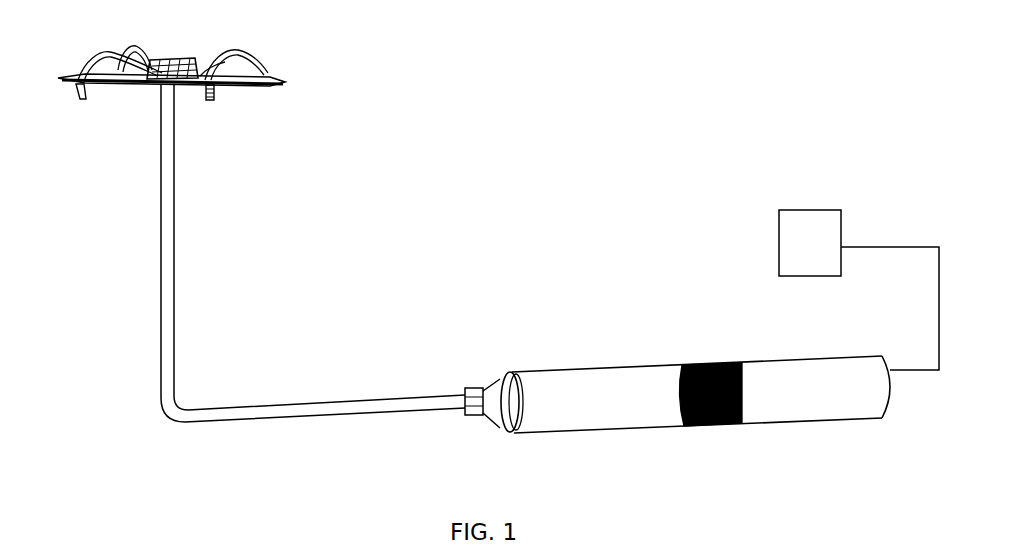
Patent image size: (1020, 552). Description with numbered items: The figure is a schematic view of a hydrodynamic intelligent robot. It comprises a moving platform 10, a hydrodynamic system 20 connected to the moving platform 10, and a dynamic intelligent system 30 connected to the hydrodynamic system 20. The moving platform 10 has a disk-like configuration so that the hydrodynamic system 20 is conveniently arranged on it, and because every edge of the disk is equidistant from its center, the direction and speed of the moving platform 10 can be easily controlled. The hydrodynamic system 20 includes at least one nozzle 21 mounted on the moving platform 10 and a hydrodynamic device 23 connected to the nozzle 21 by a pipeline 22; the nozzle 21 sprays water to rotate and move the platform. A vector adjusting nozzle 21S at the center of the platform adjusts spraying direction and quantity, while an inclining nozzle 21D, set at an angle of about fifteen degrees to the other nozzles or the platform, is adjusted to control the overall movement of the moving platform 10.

The moving platform 10 is at (258, 76).
The hydrodynamic system 20 is at (458, 245).
The nozzle 21 is at (254, 90).
The inclining nozzle 21D is at (210, 101).
The vector adjusting nozzle 21S is at (83, 100).
The pipeline 22 is at (168, 140).
The hydrodynamic device 23 is at (545, 388).
The dynamic intelligent system 30 is at (803, 255).